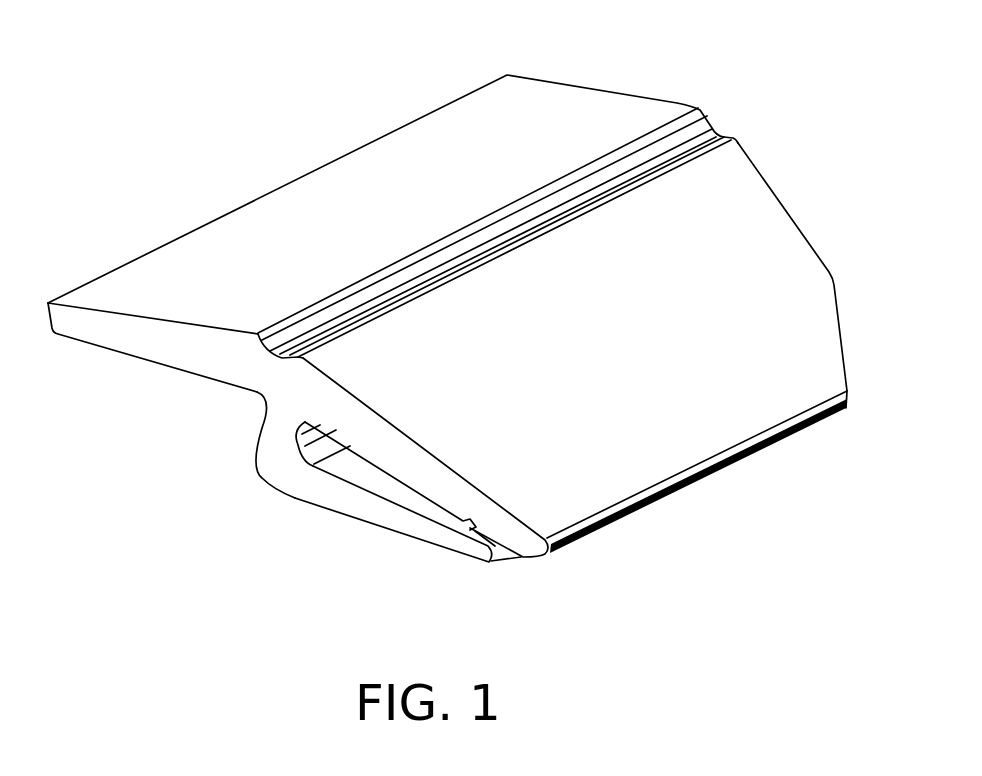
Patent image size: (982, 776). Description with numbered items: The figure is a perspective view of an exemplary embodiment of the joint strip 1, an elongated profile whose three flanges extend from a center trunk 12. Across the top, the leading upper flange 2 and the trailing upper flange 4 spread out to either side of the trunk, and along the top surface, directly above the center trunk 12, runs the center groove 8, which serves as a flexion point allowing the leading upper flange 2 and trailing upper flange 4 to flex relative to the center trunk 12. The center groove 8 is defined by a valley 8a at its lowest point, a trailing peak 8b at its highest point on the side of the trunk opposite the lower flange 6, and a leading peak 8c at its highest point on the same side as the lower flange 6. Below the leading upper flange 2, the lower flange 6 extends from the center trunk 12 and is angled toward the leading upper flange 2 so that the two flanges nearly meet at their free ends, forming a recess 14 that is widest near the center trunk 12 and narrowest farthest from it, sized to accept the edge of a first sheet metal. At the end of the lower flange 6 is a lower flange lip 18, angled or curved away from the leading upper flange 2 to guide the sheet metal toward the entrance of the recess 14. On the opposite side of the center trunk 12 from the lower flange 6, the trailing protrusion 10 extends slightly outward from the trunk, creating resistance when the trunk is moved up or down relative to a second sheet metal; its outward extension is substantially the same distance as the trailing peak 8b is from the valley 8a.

The joint strip 1 is at (186, 136).
The leading upper flange 2 is at (796, 243).
The trailing upper flange 4 is at (425, 148).
The lower flange 6 is at (402, 538).
The center groove 8 is at (710, 120).
The valley 8a is at (637, 173).
The trailing peak 8b is at (325, 305).
The leading peak 8c is at (570, 220).
The trailing protrusion 10 is at (262, 478).
The center trunk 12 is at (277, 428).
The recess 14 is at (325, 446).
The lower flange lip 18 is at (514, 553).